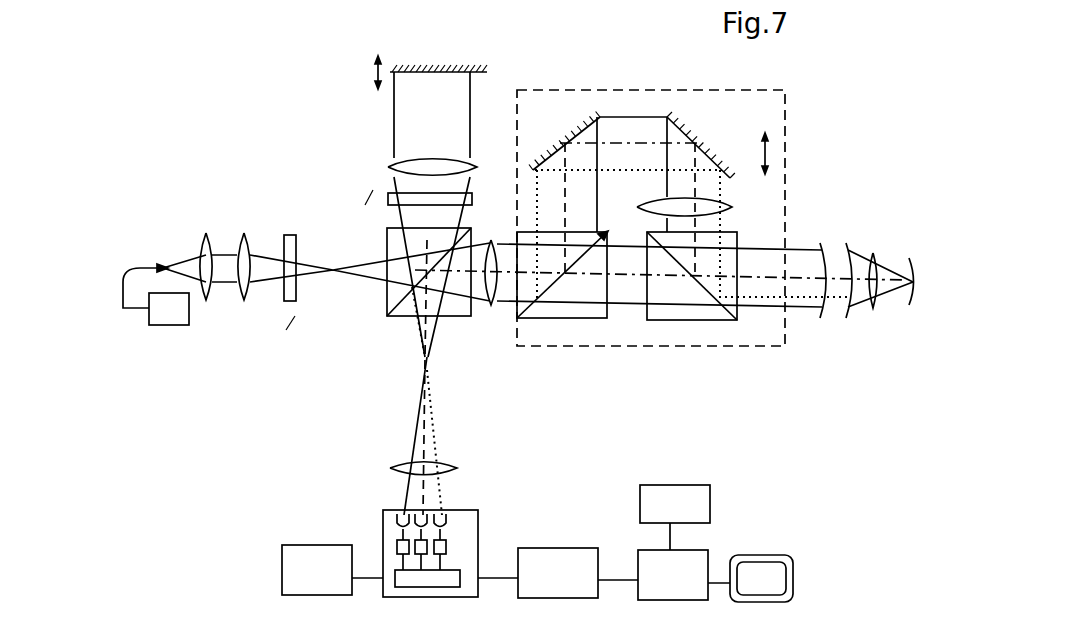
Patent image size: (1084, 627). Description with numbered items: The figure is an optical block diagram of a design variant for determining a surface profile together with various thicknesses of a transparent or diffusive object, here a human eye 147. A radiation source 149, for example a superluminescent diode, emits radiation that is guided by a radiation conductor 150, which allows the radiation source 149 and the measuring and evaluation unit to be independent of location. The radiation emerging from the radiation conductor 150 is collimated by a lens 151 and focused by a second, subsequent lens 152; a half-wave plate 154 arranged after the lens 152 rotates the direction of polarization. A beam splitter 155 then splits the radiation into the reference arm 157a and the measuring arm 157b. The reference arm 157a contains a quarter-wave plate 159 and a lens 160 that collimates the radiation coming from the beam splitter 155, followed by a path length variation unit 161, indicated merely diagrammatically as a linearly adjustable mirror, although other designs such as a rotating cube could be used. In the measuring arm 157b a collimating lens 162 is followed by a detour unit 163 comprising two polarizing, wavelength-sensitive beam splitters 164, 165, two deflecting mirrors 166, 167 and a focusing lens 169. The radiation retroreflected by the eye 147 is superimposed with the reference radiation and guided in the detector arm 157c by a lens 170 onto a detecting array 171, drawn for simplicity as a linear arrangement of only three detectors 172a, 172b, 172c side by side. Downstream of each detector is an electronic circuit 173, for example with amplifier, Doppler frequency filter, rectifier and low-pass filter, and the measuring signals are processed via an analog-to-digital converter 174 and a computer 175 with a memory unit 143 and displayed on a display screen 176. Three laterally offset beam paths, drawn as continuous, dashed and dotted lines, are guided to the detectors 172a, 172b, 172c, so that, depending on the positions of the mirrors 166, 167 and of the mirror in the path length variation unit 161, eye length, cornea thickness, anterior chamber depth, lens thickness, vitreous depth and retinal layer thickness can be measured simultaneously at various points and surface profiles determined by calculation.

The memory unit 143 is at (690, 513).
The human eye 147 is at (883, 318).
The radiation source 149 is at (185, 319).
The radiation conductor 150 is at (116, 278).
The lens 151 is at (207, 297).
The second lens 152 is at (245, 300).
The λ/2 plate 154 is at (290, 235).
The beam splitter 155 is at (387, 301).
The reference arm 157a is at (357, 143).
The measuring arm 157b is at (571, 364).
The detector arm 157c is at (384, 405).
The λ/4 plate 159 is at (388, 200).
The lens 160 is at (432, 165).
The path length variation unit 161 is at (491, 67).
The collimating lens 162 is at (490, 305).
The detour unit 163 is at (690, 346).
The polarizing, wavelength-sensitive beam splitter 164 is at (572, 318).
The polarizing, wavelength-sensitive beam splitter 165 is at (700, 320).
The deflecting mirror 166 is at (575, 137).
The deflecting mirror 167 is at (703, 141).
The focusing lens 169 is at (725, 203).
The lens 170 is at (390, 468).
The detecting array 171 is at (333, 579).
The detector 172a is at (400, 513).
The detector 172b is at (418, 520).
The detector 172c is at (445, 515).
The electronic circuit 173 is at (435, 542).
The analog-to-digital converter 174 is at (573, 583).
The computer 175 is at (689, 585).
The display screen 176 is at (765, 568).